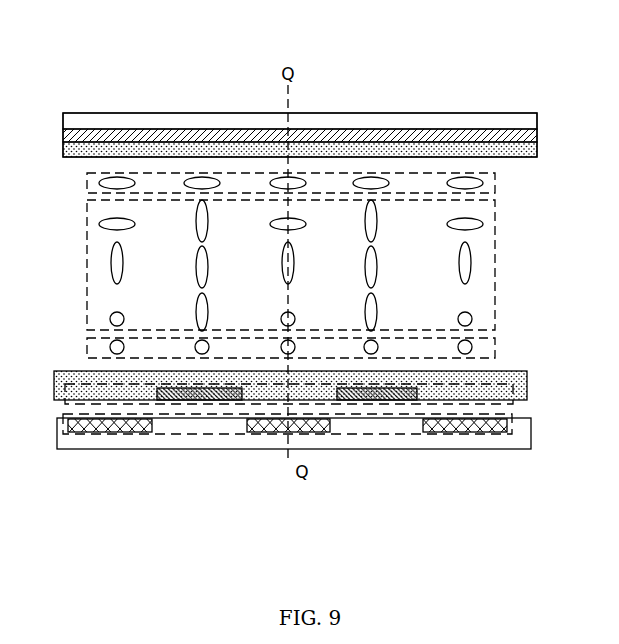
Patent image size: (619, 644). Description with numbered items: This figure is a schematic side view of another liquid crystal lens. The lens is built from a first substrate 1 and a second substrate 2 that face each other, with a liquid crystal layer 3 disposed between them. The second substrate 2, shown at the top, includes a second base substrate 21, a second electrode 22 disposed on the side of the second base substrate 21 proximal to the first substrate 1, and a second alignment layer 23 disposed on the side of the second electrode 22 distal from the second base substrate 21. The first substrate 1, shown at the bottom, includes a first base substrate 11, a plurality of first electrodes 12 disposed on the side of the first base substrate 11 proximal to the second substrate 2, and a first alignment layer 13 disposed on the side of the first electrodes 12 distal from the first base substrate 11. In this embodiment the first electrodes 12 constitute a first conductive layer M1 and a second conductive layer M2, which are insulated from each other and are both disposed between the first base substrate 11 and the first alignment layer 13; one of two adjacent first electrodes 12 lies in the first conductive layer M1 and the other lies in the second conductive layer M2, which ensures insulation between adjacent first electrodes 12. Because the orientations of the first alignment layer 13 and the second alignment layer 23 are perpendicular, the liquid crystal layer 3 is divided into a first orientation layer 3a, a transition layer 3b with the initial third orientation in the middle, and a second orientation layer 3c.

The first substrate 1 is at (270, 470).
The first base substrate 11 is at (359, 440).
The first electrodes 12 is at (199, 388).
The first alignment layer 13 is at (466, 388).
The second substrate 2 is at (300, 85).
The second base substrate 21 is at (175, 122).
The second electrode 22 is at (110, 138).
The second alignment layer 23 is at (235, 152).
The liquid crystal layer 3 is at (314, 265).
The first orientation layer 3a is at (87, 183).
The transition layer 3b is at (87, 265).
The second orientation layer 3c is at (87, 348).
The first conductive layer M1 is at (122, 434).
The second conductive layer M2 is at (65, 393).